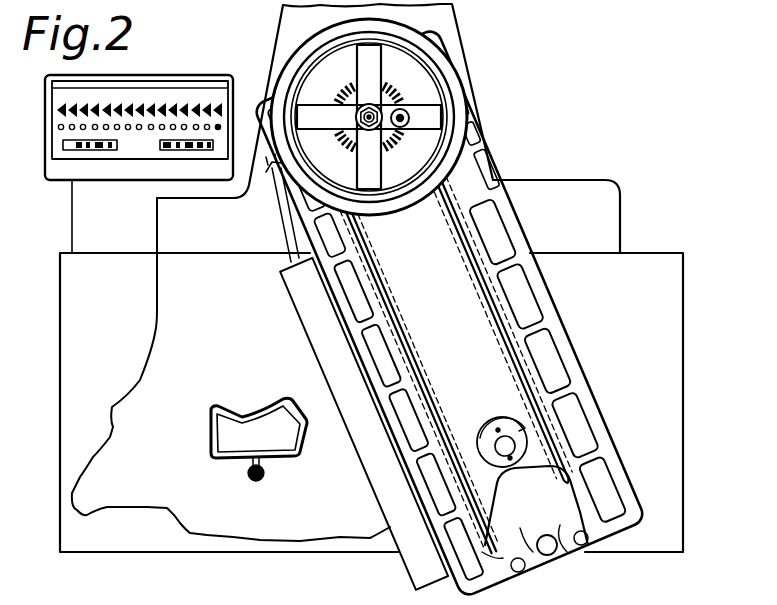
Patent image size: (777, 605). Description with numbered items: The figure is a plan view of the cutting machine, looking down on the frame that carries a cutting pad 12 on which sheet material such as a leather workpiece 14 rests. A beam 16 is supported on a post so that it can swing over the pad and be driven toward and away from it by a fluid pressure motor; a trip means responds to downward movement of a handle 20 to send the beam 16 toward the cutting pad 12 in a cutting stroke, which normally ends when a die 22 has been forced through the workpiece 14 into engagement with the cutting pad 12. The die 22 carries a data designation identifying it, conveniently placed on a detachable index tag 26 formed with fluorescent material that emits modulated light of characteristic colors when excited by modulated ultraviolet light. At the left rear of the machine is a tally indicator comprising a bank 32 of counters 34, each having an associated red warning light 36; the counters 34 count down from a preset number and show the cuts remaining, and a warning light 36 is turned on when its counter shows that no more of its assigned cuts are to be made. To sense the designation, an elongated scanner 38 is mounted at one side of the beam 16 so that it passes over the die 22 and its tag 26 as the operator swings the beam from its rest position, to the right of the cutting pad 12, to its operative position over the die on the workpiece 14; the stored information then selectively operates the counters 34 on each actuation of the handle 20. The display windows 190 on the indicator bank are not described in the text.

The cutting pad 12 is at (680, 280).
The leather workpiece 14 is at (168, 322).
The beam 16 is at (582, 375).
The handle 20 is at (565, 553).
The die 22 is at (238, 408).
The detachable index tag 26 is at (248, 475).
The bank of counters 32 is at (148, 80).
The counters 34 is at (218, 103).
The red warning light 36 is at (82, 130).
The elongated scanner 38 is at (300, 312).
The display windows 190 is at (77, 150).